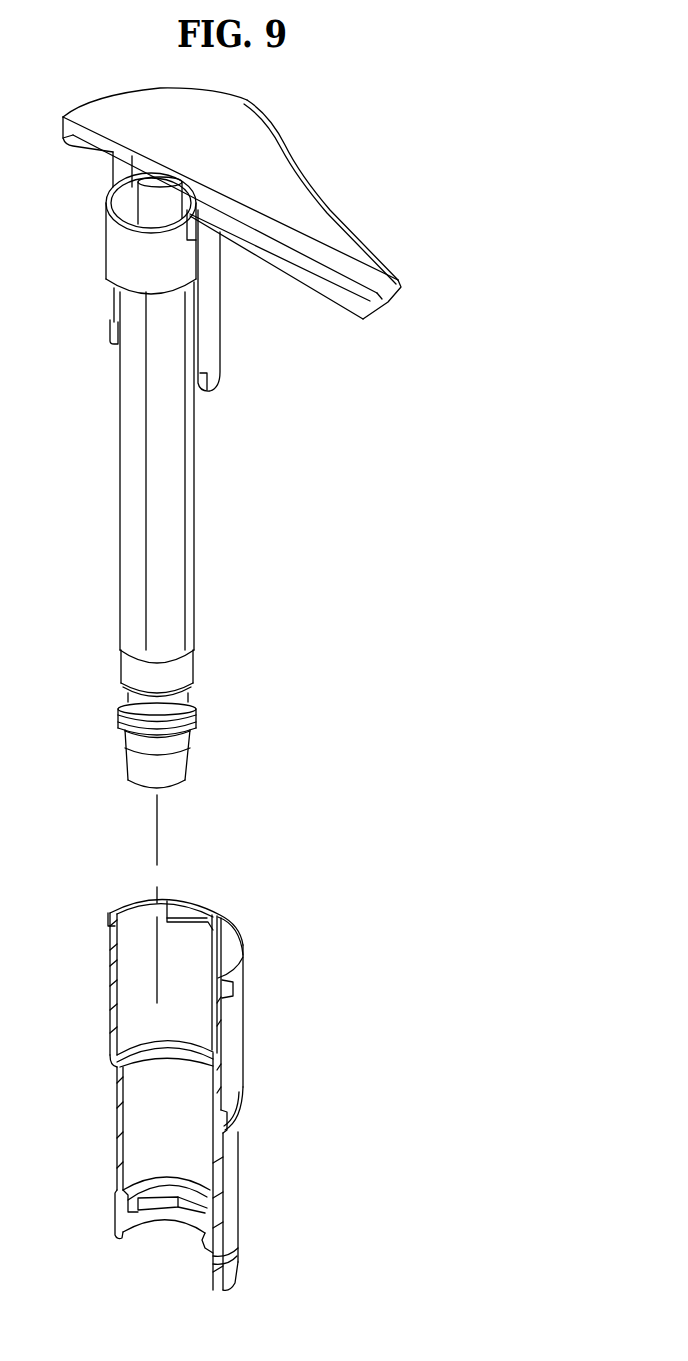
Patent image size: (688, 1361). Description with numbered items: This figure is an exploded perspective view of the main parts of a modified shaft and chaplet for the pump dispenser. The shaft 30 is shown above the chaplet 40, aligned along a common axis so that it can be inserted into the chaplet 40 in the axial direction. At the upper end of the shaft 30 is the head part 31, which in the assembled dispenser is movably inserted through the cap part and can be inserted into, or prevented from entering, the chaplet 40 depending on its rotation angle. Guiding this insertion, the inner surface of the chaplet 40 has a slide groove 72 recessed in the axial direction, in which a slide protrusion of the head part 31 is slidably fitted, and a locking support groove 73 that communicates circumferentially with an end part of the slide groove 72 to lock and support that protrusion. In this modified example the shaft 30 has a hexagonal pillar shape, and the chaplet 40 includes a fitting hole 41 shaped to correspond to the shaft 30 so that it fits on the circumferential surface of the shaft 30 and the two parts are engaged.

The head part 31 is at (242, 112).
The shaft 30 is at (177, 517).
The chaplet 40 is at (244, 1045).
The slide groove 72 is at (217, 957).
The locking support groove 73 is at (187, 922).
The fitting hole 41 is at (185, 1215).